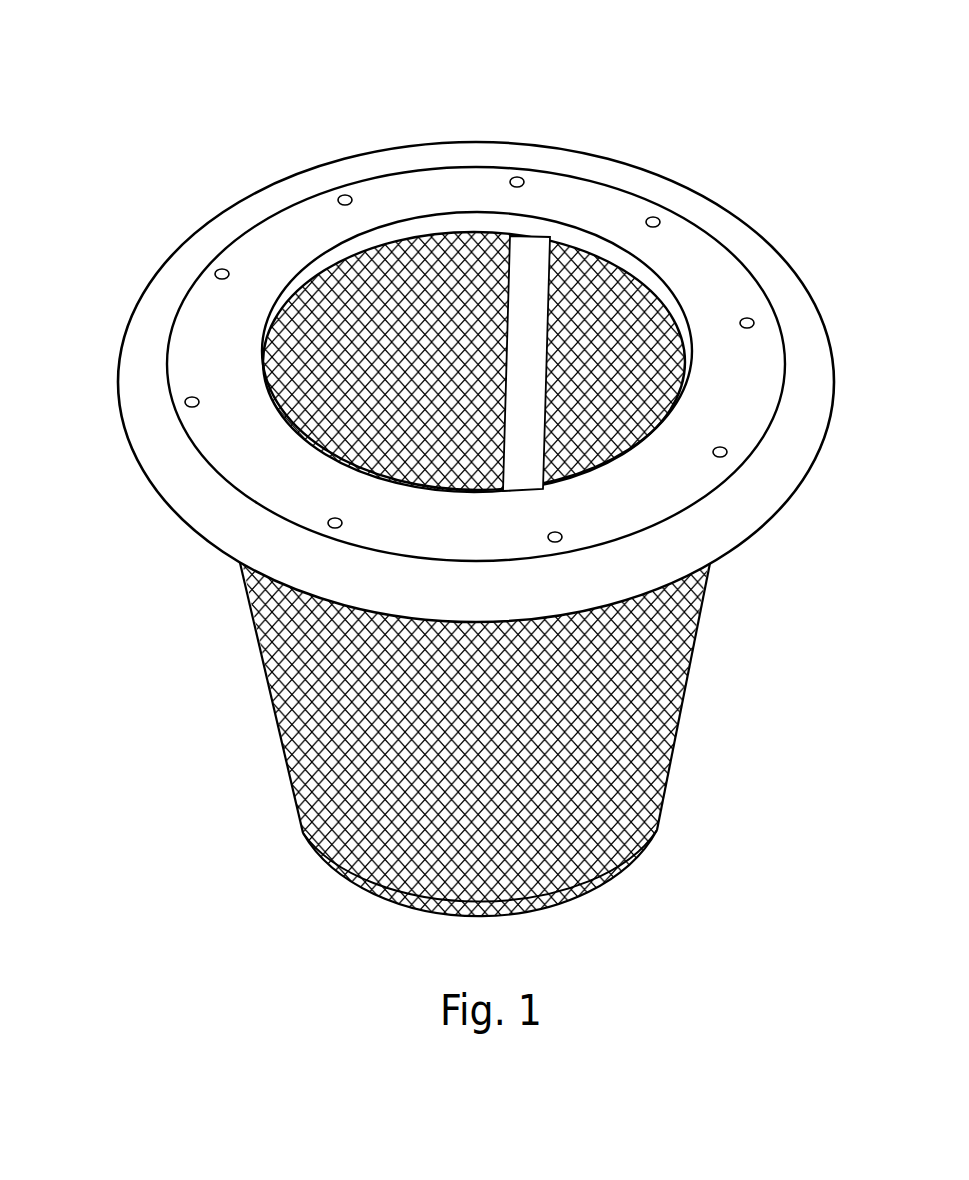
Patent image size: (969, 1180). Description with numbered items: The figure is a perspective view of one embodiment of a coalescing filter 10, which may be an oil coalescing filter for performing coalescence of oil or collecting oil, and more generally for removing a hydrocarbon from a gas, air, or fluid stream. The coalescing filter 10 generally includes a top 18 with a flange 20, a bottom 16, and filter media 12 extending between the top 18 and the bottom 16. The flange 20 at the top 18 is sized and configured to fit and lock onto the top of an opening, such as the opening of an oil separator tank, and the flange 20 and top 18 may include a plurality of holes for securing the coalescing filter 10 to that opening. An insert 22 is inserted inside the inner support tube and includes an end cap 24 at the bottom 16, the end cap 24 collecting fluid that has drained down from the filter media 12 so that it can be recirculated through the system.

The coalescing filter 10 is at (211, 109).
The filter media 12 is at (724, 663).
The bottom 16 is at (612, 891).
The top 18 is at (437, 117).
The flange 20 is at (95, 342).
The insert 22 is at (523, 262).
The end cap 24 is at (380, 890).